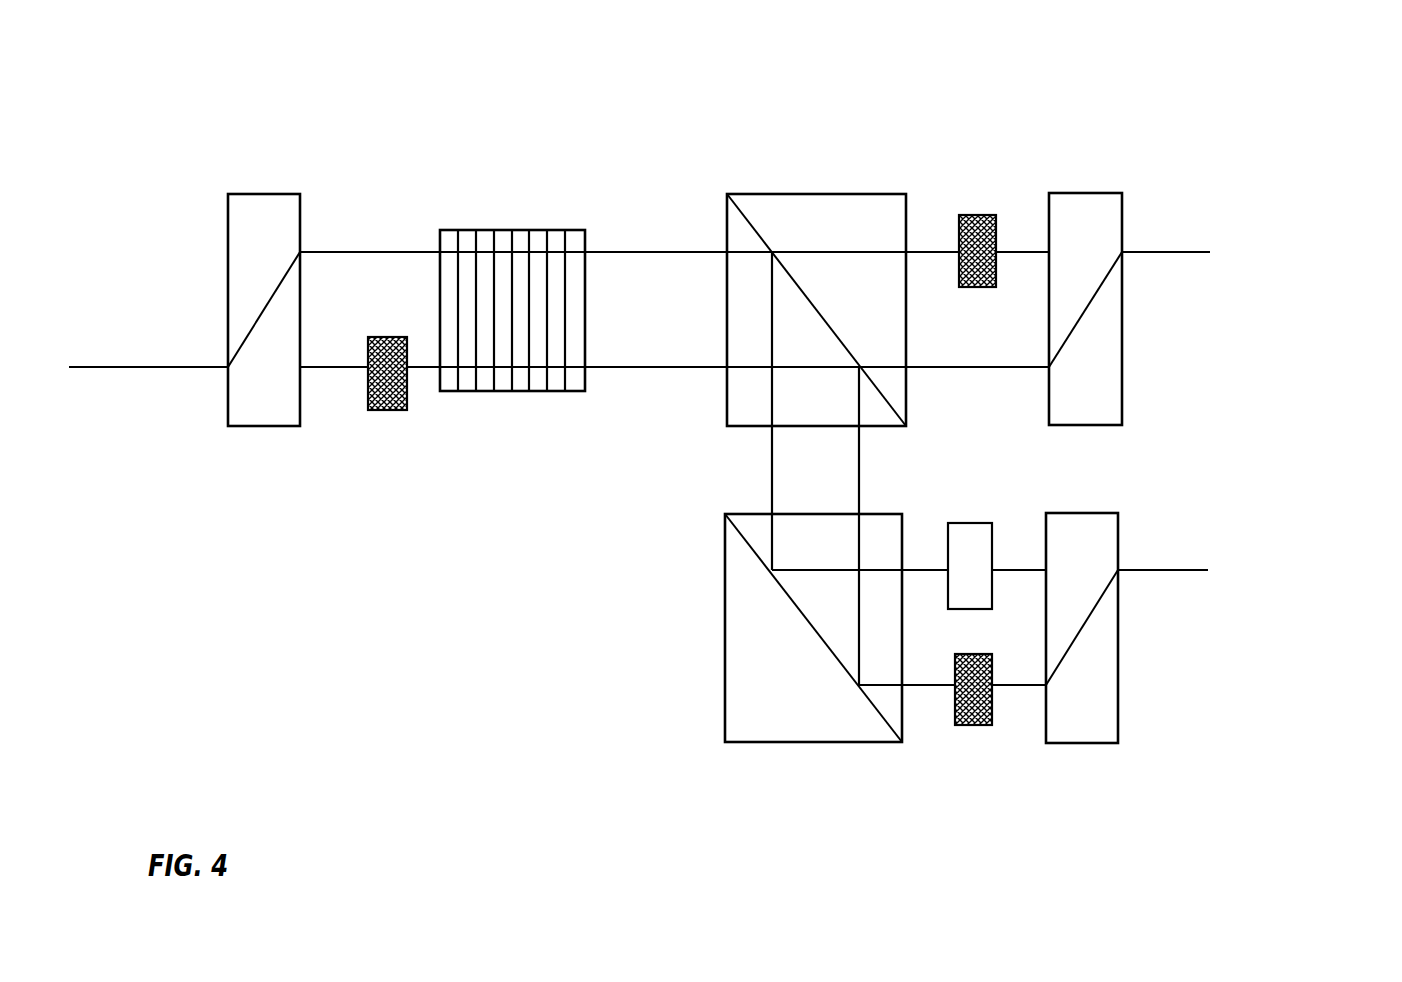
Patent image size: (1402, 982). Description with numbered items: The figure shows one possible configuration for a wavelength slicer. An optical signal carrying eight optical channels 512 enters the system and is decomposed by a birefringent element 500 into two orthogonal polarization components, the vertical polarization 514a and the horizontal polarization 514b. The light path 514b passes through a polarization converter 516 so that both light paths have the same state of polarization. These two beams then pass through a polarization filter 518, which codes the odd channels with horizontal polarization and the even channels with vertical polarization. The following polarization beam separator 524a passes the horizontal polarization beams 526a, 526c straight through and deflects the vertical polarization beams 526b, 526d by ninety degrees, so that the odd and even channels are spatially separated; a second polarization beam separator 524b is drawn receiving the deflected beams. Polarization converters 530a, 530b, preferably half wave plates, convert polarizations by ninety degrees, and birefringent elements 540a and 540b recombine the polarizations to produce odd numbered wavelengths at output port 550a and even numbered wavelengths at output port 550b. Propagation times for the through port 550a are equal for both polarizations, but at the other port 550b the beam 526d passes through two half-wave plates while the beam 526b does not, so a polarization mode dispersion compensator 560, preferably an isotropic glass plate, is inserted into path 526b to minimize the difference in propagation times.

The birefringent element 500 is at (264, 194).
The optical signal carrying eight optical channels 512 is at (133, 370).
The vertical polarization 514a is at (333, 252).
The horizontal polarization 514b is at (333, 367).
The polarization converter 516 is at (389, 412).
The polarization filter 518 is at (514, 229).
The polarization beam separator 524a is at (814, 193).
The polarization beam separator 524b is at (784, 745).
The horizontal polarization beam 526a is at (920, 256).
The vertical polarization beam 526b is at (772, 477).
The horizontal polarization beam 526c is at (934, 370).
The vertical polarization beam 526d is at (918, 688).
The polarization converter 530a is at (973, 212).
The polarization converter 530b is at (976, 727).
The birefringent element 540a is at (1088, 193).
The birefringent element 540b is at (1108, 513).
The output port 550a is at (1166, 251).
The output port 550b is at (1163, 570).
The polarization mode dispersion compensator 560 is at (968, 524).